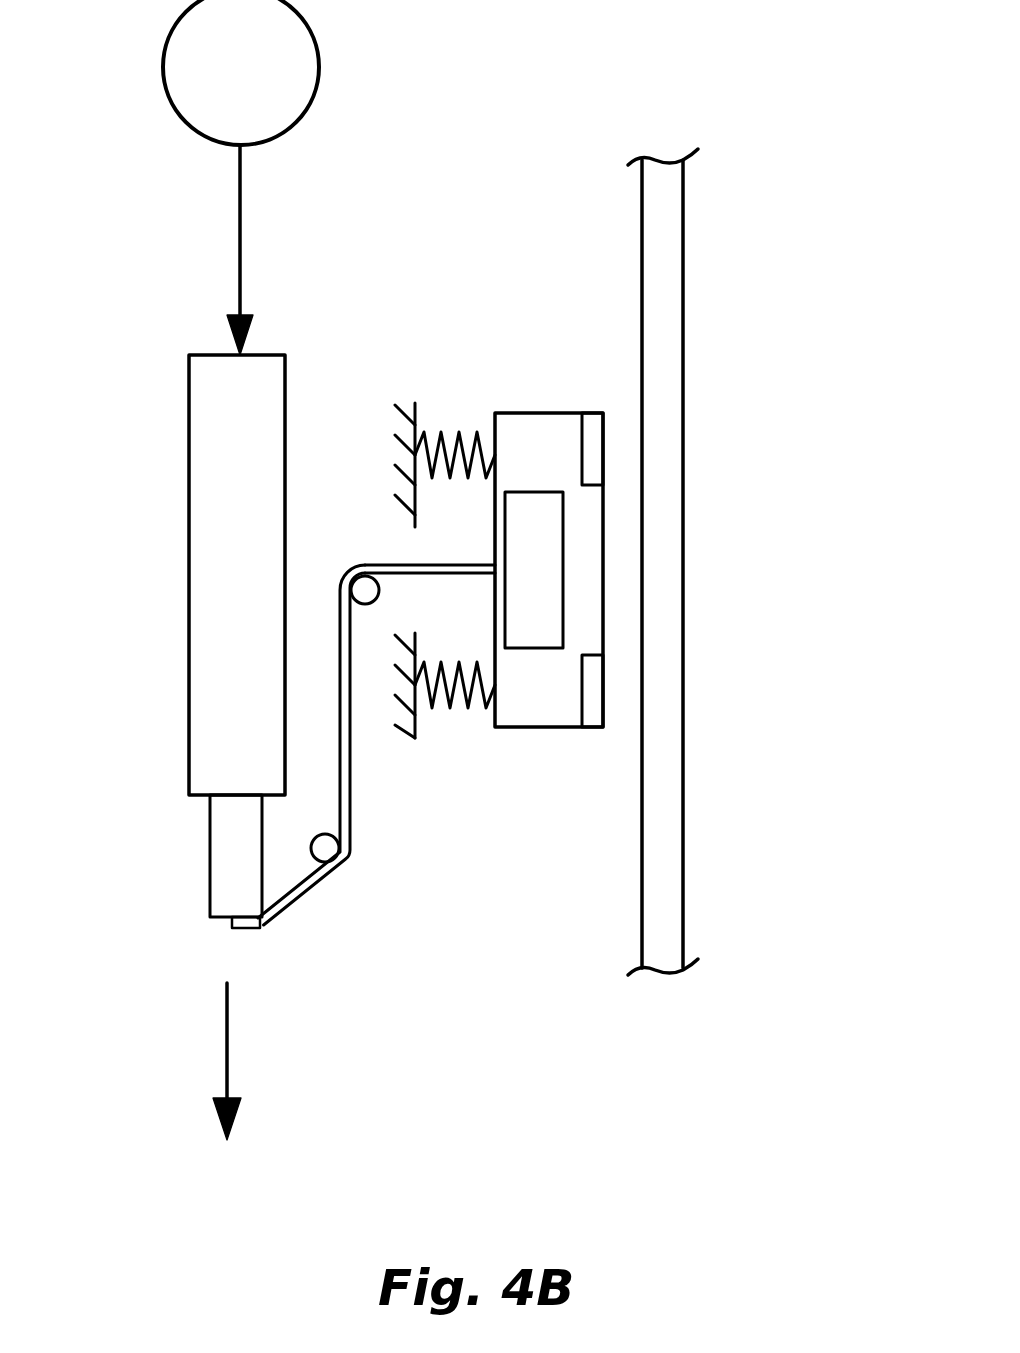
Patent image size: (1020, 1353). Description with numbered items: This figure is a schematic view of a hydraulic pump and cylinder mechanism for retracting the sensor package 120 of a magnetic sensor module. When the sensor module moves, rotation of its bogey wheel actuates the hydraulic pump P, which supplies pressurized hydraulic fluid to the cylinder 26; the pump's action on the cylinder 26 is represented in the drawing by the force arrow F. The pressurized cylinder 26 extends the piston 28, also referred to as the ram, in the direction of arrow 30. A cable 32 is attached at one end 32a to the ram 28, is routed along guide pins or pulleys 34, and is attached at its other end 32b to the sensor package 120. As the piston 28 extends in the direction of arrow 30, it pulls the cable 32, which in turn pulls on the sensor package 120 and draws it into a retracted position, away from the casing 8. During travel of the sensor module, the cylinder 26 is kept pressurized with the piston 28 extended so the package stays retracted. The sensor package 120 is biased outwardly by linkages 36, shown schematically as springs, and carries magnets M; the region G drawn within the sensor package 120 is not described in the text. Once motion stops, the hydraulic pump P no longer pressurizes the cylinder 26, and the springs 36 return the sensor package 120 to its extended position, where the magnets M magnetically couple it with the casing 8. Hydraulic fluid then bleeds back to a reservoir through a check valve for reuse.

The hydraulic pump P is at (241, 72).
The applied force F is at (240, 190).
The cylinder 26 is at (212, 468).
The piston 28 is at (218, 822).
The arrow 30 is at (209, 1061).
The cable 32 is at (367, 682).
The one end of cable 32a is at (238, 932).
The other end of cable 32b is at (488, 565).
The guide pins or pulleys 34 is at (357, 565).
The linkages 36 is at (455, 712).
The sensor package 120 is at (580, 566).
The gap/guide element G is at (543, 515).
The magnets M is at (593, 436).
The casing 8 is at (663, 788).